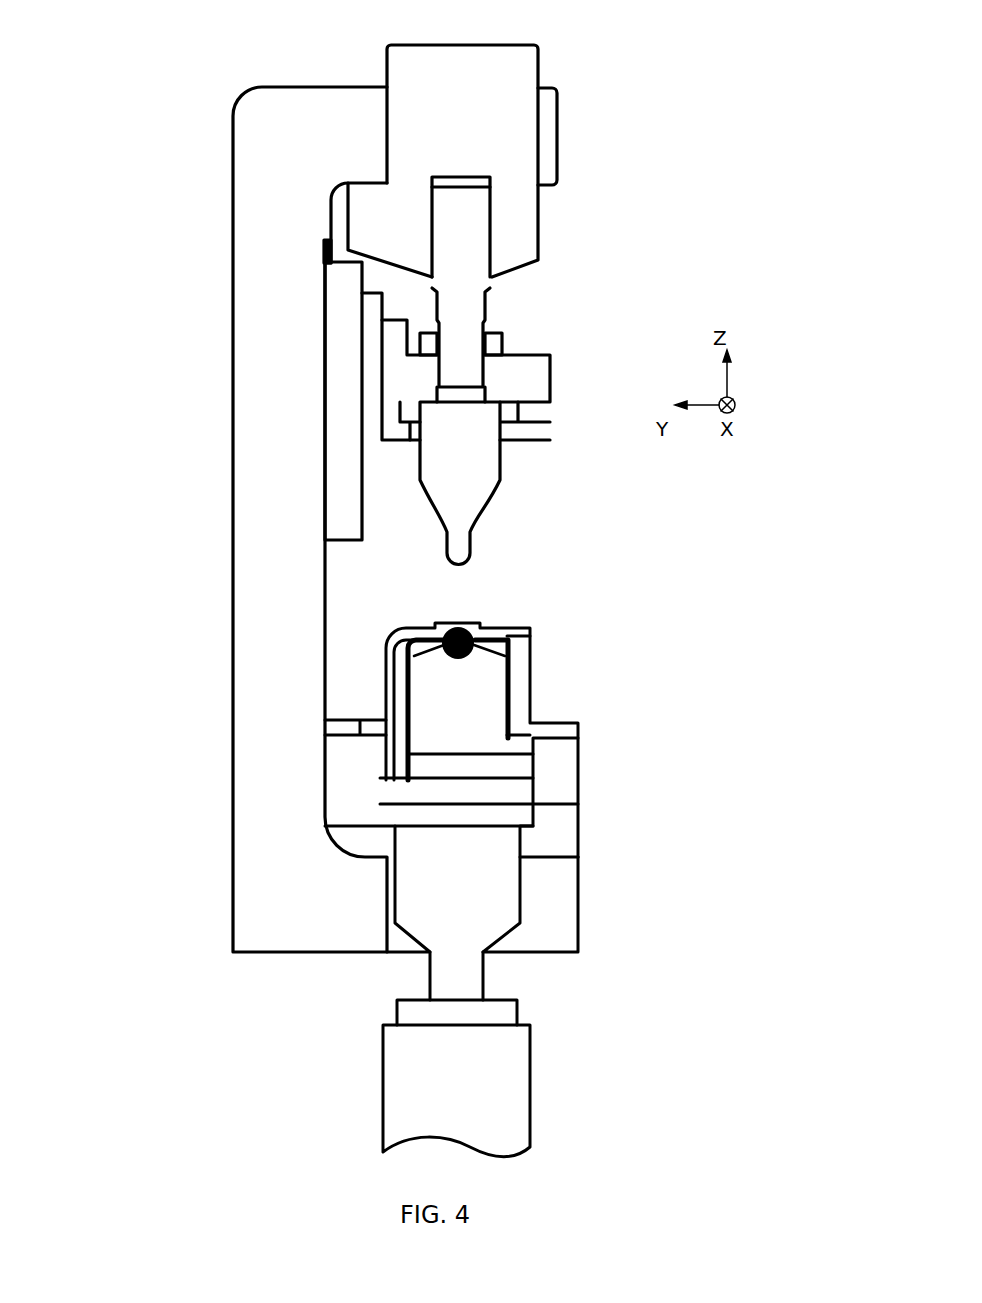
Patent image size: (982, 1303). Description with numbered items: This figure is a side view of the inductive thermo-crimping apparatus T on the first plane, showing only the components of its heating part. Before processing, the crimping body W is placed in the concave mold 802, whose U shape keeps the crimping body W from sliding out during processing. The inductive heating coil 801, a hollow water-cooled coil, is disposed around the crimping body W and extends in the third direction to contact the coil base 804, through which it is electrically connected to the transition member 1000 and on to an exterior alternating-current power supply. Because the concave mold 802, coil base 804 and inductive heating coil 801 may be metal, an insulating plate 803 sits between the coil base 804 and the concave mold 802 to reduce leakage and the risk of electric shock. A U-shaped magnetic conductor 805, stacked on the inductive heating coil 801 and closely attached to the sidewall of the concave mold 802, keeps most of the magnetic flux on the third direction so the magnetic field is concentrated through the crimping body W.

The inductive thermo-crimping apparatus T is at (193, 171).
The crimping body W is at (457, 632).
The inductive heating coil 801 is at (399, 652).
The concave mold 802 is at (458, 658).
The insulating plate 803 is at (500, 770).
The coil base 804 is at (500, 813).
The magnetic conductor 805 is at (471, 633).
The transition member 1000 is at (458, 967).